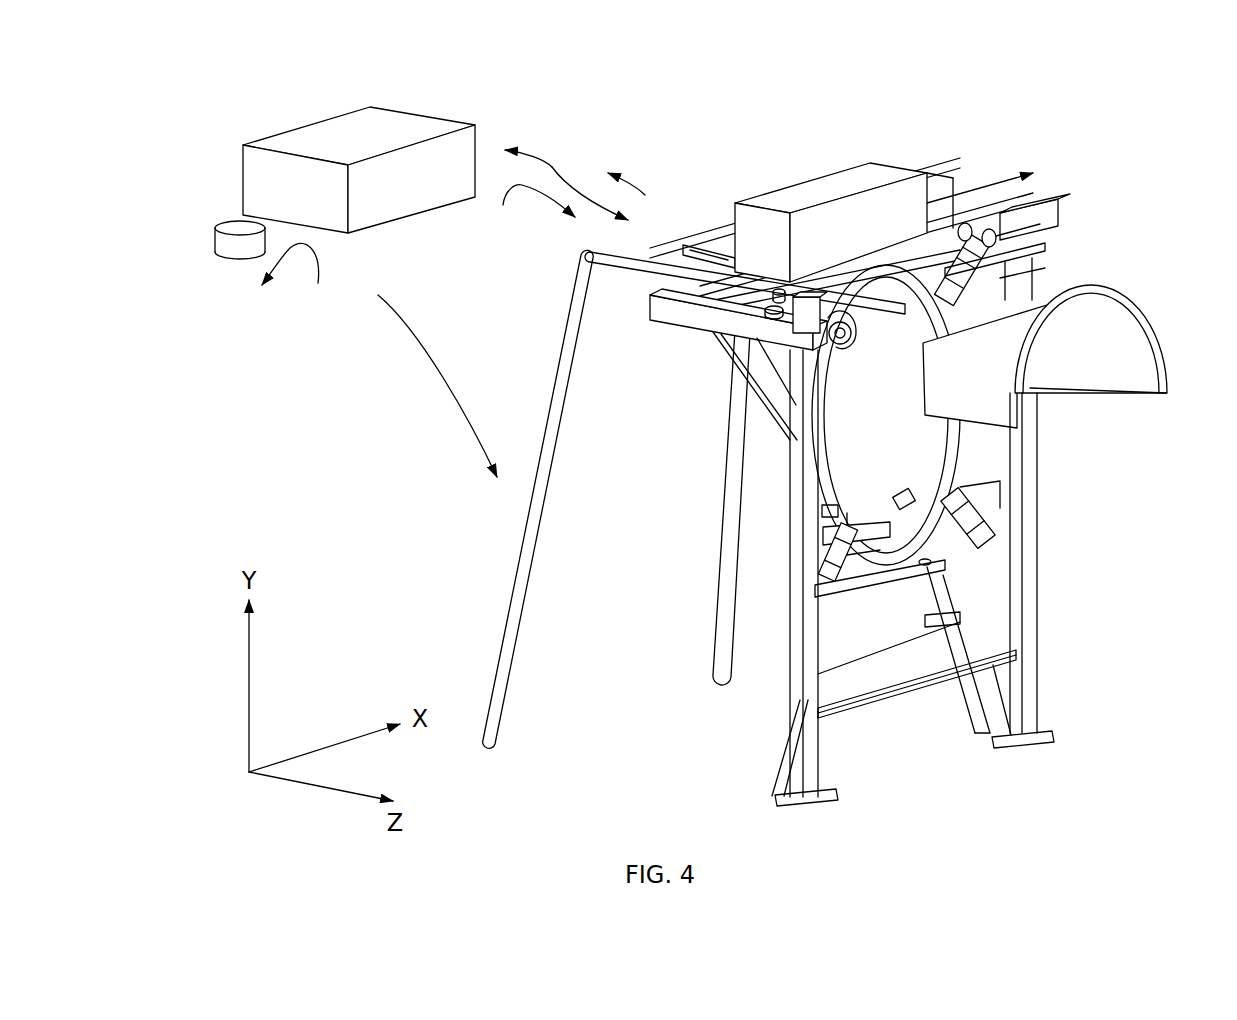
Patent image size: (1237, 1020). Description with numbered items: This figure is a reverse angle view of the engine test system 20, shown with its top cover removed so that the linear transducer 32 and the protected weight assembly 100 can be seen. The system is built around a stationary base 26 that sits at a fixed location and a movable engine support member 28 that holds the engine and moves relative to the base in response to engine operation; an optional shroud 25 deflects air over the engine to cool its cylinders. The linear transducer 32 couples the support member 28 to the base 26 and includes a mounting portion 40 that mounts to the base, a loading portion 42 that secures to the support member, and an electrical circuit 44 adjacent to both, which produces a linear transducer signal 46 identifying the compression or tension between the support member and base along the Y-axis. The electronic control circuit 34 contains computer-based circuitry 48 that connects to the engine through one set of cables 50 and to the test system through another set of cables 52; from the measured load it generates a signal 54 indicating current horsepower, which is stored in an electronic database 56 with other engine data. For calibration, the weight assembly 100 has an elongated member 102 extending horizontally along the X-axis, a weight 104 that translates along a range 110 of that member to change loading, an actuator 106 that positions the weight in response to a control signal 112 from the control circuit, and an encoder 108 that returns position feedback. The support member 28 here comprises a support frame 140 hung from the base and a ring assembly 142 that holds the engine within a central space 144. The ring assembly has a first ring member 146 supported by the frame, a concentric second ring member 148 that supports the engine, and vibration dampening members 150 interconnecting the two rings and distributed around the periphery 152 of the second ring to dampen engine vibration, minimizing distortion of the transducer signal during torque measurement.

The engine test system 20 is at (1115, 168).
The shroud 25 is at (1125, 342).
The stationary base 26 is at (817, 747).
The movable engine support member 28 is at (770, 528).
The linear transducer 32 is at (648, 440).
The electronic control circuit 34 is at (302, 131).
The mounting portion 40 is at (766, 288).
The loading portion 42 is at (770, 333).
The electrical circuit 44 is at (755, 312).
The linear transducer signal 46 is at (668, 200).
The computer-based circuitry 48 is at (311, 195).
The set of cables 50 is at (437, 386).
The set of cables 52 is at (552, 167).
The signal 54 is at (299, 277).
The electronic database 56 is at (240, 263).
The weight assembly 100 is at (888, 318).
The elongated member 102 is at (908, 280).
The weight 104 is at (1040, 207).
The actuator 106 is at (1030, 233).
The encoder 108 is at (1033, 237).
The range 110 is at (890, 215).
The control signal 112 is at (529, 213).
The support frame 140 is at (658, 308).
The ring assembly 142 is at (833, 453).
The central space 144 is at (888, 447).
The first ring member 146 is at (930, 543).
The second ring member 148 is at (947, 462).
The vibration dampening members 150 is at (848, 506).
The periphery 152 is at (872, 562).